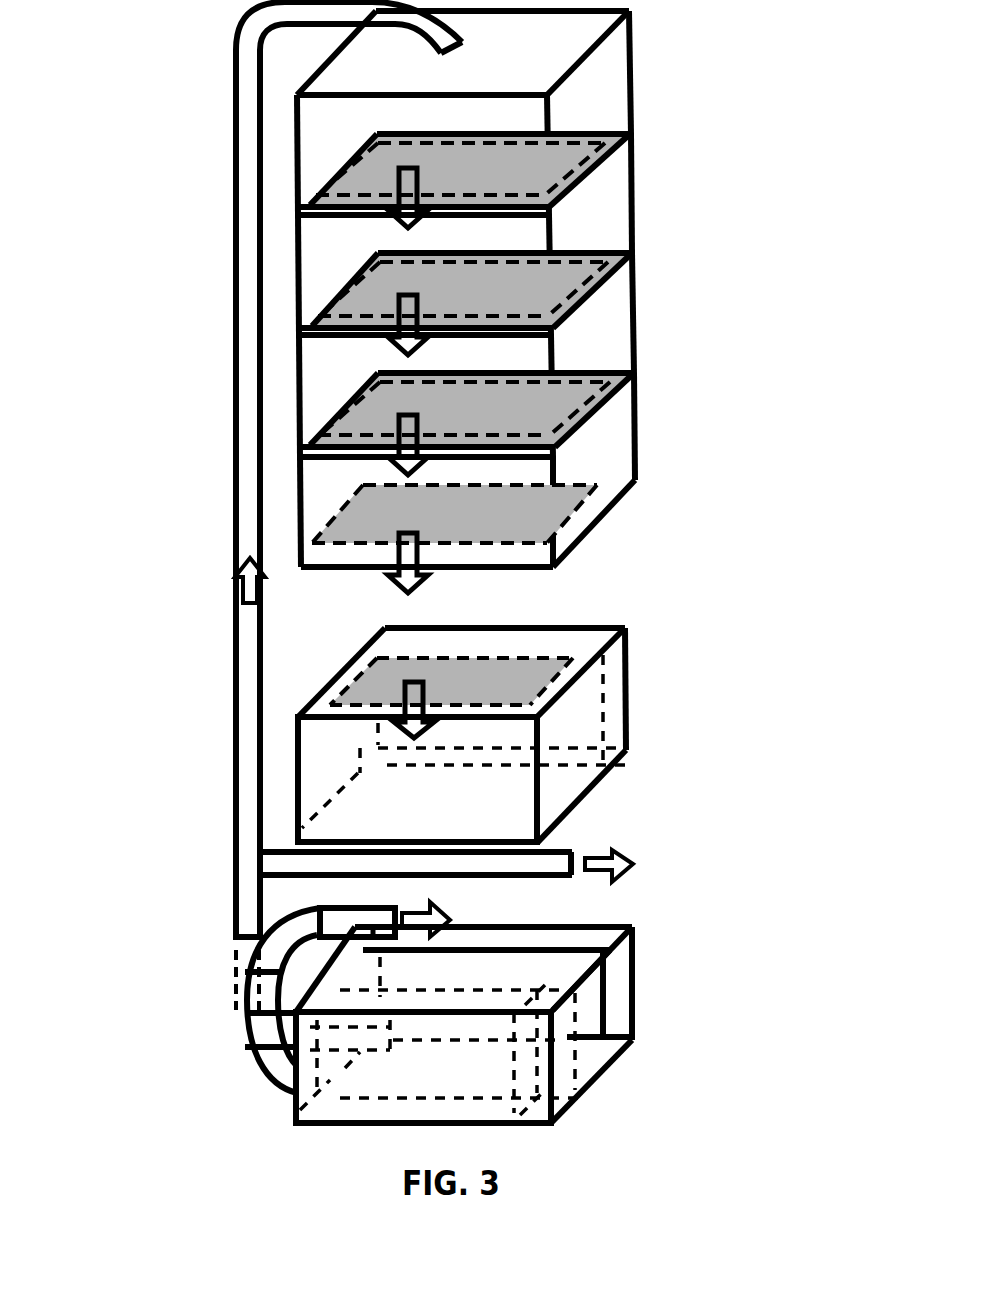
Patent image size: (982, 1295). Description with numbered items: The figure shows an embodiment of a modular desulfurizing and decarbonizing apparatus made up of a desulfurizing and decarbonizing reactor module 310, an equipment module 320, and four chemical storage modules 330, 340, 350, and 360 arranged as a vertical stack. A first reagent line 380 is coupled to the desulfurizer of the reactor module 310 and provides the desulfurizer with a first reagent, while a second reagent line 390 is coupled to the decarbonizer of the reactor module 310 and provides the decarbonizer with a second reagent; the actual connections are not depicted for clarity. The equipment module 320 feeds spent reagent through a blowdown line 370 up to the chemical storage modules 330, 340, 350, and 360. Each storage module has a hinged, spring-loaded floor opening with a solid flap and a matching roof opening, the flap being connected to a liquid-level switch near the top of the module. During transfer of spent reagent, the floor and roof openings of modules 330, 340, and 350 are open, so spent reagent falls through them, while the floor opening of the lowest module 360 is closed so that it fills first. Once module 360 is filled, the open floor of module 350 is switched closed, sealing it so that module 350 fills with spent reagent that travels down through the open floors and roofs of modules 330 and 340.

The desulfurizing and decarbonizing reactor module 310 is at (648, 694).
The equipment module 320 is at (654, 989).
The chemical storage module 330 is at (650, 74).
The chemical storage module 340 is at (654, 192).
The chemical storage module 350 is at (658, 316).
The chemical storage module 360 is at (658, 429).
The blowdown line 370 is at (217, 472).
The first reagent line 380 is at (347, 916).
The second reagent line 390 is at (588, 842).